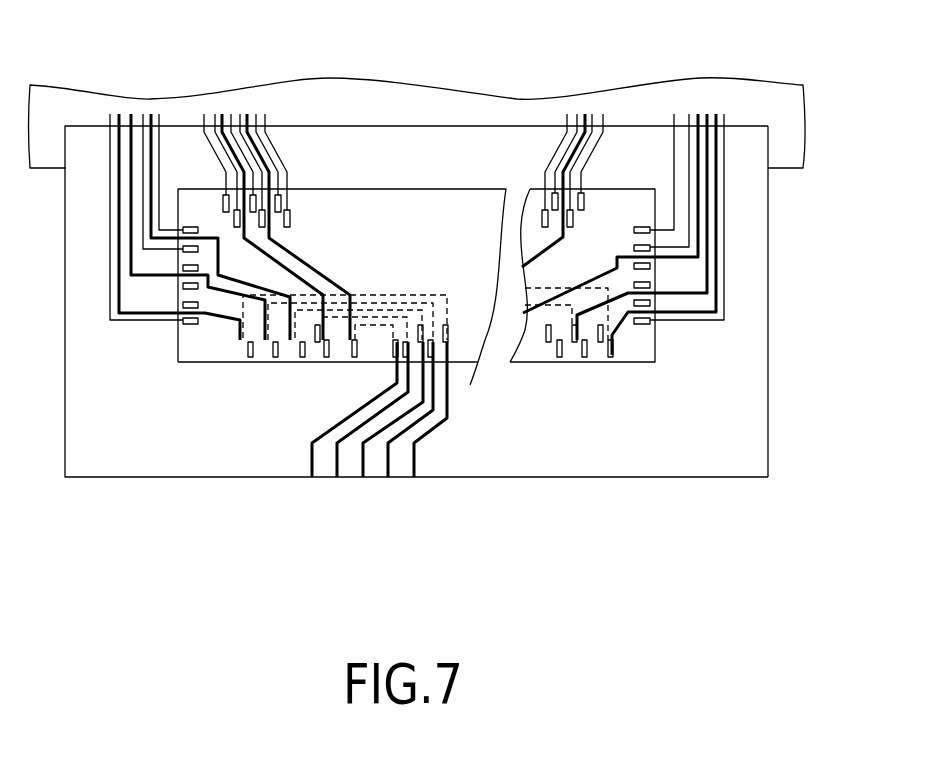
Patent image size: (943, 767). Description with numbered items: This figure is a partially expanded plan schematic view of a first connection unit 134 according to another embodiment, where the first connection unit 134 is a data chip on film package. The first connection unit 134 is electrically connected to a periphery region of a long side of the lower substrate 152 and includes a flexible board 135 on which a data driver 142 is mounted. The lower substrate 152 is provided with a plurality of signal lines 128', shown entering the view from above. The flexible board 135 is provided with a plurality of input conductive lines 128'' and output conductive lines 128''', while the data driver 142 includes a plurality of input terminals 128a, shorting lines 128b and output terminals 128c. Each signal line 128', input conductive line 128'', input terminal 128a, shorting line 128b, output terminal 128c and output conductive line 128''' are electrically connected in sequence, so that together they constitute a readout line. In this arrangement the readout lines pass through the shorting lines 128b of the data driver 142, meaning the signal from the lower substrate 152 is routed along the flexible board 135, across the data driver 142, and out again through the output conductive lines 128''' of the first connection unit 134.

The lower substrate 152 is at (45, 122).
The signal line 128' is at (137, 104).
The input conductive line 128'' is at (126, 298).
The input terminal 128a is at (240, 337).
The shorting line 128b is at (383, 293).
The output terminal 128c is at (447, 330).
The output conductive line 128''' is at (381, 439).
The data driver 142 is at (640, 350).
The flexible board 135 is at (698, 422).
The first connection unit 134 is at (768, 440).